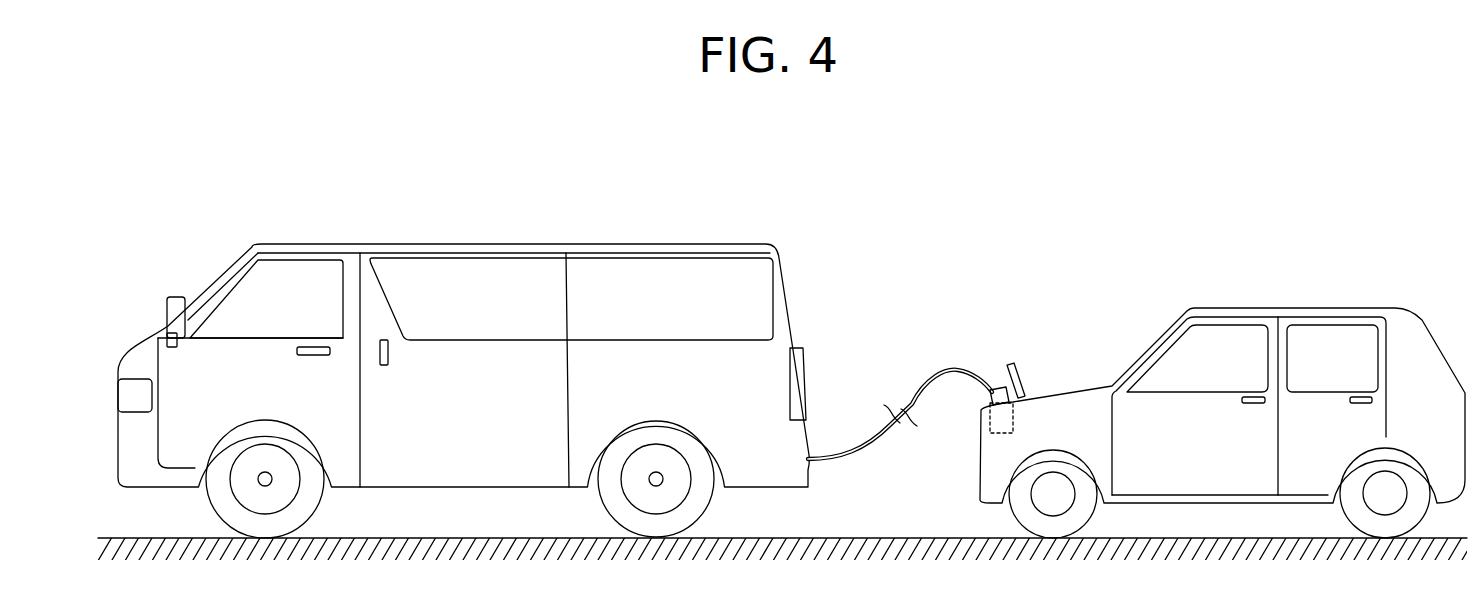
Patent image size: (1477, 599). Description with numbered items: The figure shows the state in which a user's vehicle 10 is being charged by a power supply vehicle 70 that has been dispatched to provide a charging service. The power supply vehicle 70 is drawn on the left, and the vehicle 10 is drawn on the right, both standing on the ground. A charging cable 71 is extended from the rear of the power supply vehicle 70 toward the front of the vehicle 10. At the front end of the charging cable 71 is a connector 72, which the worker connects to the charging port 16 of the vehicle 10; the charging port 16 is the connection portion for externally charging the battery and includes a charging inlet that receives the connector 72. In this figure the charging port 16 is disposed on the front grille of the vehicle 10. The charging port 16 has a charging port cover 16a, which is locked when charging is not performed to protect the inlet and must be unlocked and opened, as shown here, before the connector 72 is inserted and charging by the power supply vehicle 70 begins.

The power supply vehicle 70 is at (520, 231).
The vehicle 10 is at (1286, 297).
The charging cable 71 is at (924, 375).
The connector 72 is at (990, 394).
The charging port 16 is at (980, 431).
The charging port cover 16a is at (1020, 372).